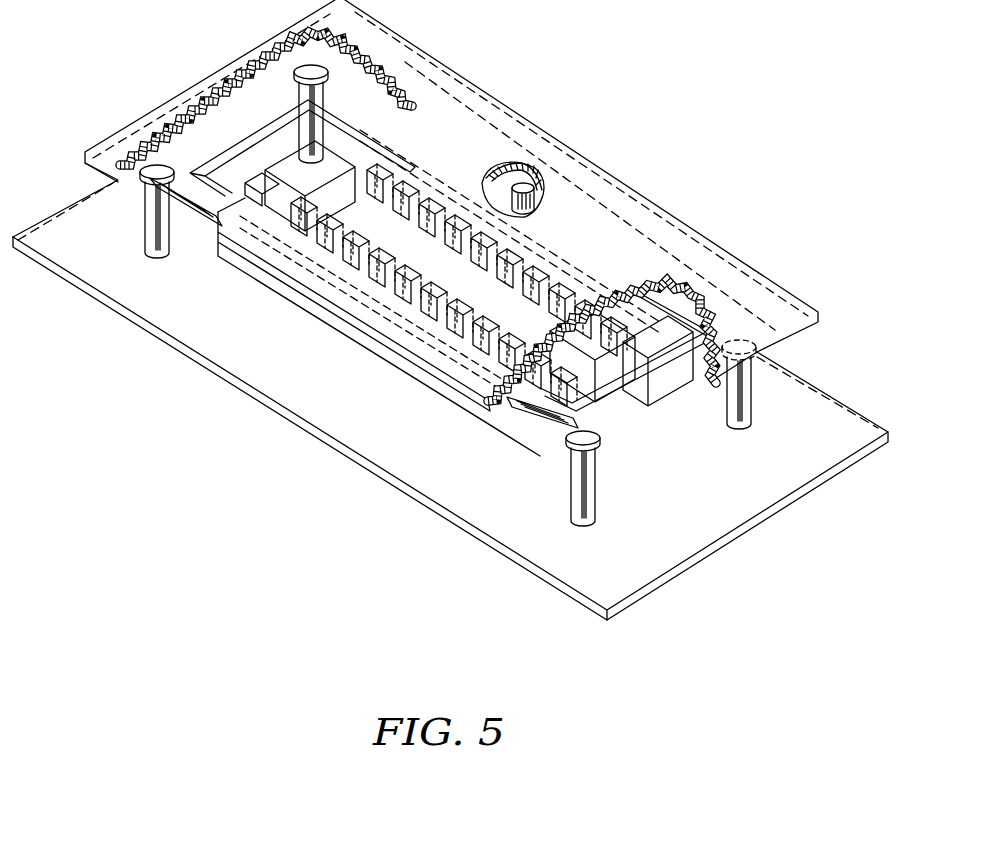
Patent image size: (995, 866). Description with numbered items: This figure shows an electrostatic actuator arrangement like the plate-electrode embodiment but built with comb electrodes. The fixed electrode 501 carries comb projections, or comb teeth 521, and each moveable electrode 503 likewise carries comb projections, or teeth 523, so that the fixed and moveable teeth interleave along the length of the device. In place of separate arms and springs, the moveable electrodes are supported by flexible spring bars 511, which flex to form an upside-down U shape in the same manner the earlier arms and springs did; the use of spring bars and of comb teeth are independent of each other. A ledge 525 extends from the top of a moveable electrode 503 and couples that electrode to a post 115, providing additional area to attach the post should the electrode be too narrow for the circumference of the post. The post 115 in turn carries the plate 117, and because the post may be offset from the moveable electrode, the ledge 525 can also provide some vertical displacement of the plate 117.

The post 115 is at (527, 188).
The plate 117 is at (780, 310).
The fixed electrode 501 is at (448, 295).
The moveable electrode 503 is at (418, 377).
The flexible spring bar 511 is at (250, 138).
The comb projection (comb tooth) 521 is at (338, 165).
The comb projection (tooth) 523 is at (360, 173).
The ledge 525 is at (505, 180).